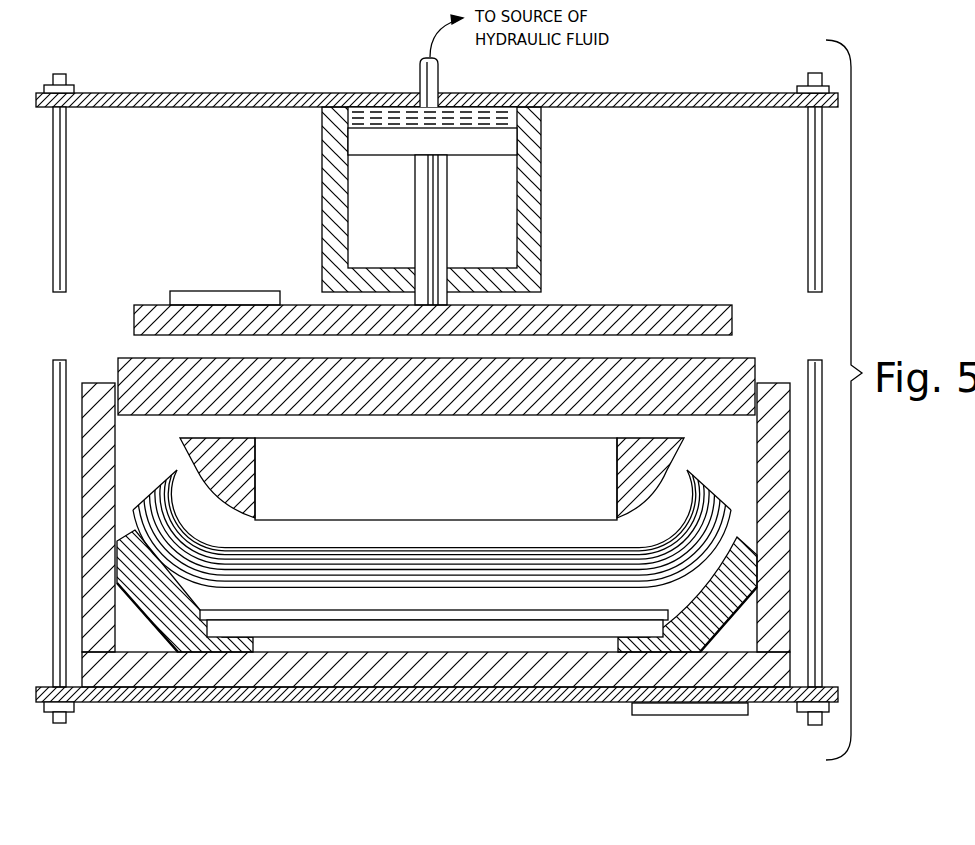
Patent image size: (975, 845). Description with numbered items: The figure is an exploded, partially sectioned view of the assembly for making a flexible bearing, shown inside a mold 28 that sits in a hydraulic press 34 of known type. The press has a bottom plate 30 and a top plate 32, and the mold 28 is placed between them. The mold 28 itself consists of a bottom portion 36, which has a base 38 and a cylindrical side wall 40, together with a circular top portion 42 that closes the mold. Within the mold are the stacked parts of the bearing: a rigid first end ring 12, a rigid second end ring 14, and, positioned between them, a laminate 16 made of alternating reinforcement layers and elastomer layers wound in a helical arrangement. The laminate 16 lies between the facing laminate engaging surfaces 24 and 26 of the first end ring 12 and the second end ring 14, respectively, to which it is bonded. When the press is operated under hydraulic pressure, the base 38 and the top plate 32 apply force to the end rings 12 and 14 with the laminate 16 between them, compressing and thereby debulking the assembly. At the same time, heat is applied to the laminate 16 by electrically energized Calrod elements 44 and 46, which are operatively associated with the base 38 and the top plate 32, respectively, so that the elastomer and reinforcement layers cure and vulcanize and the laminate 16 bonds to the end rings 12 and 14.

The first end ring 12 is at (125, 565).
The second end ring 14 is at (204, 456).
The laminate 16 is at (225, 545).
The laminate engaging surface 24 is at (682, 595).
The laminate engaging surface 26 is at (676, 453).
The mold 28 is at (424, 533).
The bottom plate 30 is at (227, 697).
The top plate 32 is at (594, 307).
The hydraulic press 34 is at (300, 250).
The bottom portion 36 is at (92, 612).
The base 38 is at (380, 688).
The cylindrical side wall 40 is at (92, 436).
The circular top portion 42 is at (147, 370).
The Calrod element 44 is at (680, 716).
The Calrod element 46 is at (200, 290).